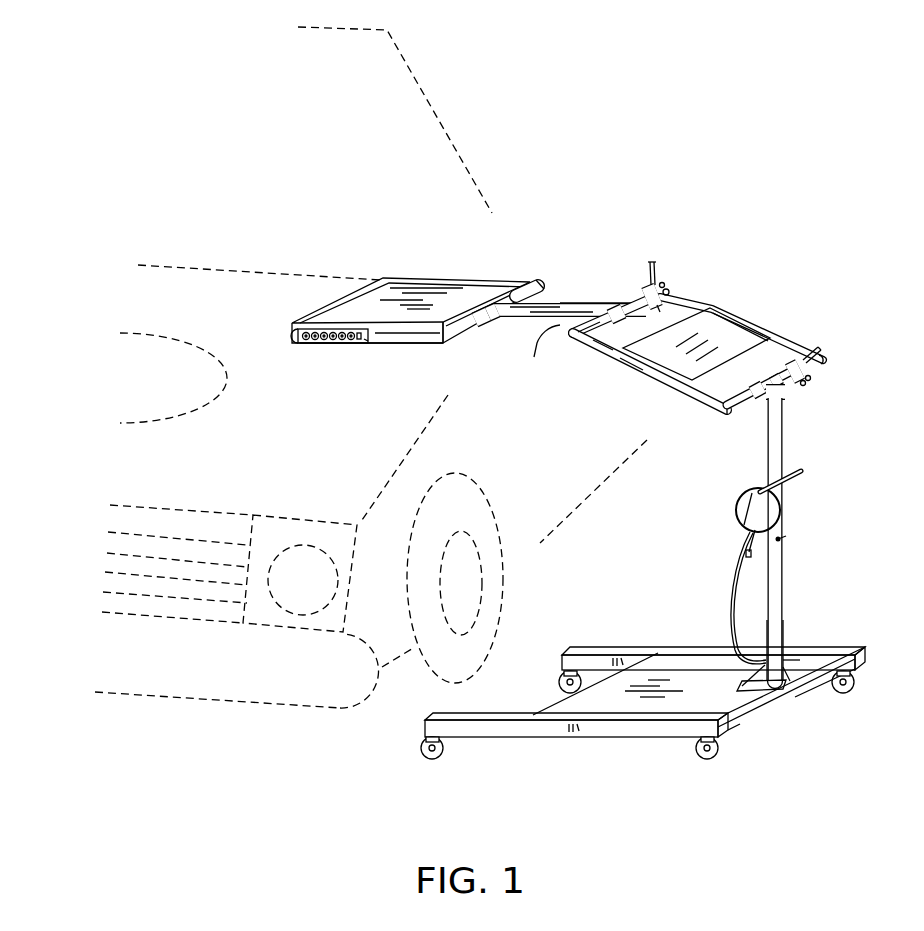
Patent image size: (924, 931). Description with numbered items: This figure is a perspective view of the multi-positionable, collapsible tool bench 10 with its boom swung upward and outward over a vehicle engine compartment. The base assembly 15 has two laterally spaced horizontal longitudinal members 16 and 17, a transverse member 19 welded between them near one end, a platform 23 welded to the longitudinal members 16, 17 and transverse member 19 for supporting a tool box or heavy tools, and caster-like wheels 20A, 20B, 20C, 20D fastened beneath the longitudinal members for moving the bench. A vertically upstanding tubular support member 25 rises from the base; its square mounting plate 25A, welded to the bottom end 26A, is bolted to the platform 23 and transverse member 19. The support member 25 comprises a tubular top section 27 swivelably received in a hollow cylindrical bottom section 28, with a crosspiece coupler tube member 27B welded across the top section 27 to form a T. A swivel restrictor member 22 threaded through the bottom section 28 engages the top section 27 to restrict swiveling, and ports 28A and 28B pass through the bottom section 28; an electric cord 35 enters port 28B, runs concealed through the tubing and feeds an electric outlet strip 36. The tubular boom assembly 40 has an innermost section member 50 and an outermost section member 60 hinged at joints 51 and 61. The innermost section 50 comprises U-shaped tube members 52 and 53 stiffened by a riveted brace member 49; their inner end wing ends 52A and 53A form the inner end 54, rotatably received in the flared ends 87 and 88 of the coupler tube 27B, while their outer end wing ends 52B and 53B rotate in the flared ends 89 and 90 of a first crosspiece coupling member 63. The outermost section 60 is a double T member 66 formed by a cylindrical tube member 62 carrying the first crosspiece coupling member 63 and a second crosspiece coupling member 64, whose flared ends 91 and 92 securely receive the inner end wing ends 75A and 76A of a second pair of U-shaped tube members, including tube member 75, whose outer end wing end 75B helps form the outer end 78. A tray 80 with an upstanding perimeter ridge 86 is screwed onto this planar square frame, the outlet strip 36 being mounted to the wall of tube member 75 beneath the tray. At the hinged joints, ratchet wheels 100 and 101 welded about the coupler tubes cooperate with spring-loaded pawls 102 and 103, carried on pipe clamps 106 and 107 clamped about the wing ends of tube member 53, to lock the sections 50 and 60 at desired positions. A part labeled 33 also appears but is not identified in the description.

The tool bench 10 is at (606, 190).
The base assembly 15 is at (645, 678).
The longitudinal member 16 is at (528, 737).
The longitudinal member 17 is at (627, 648).
The transverse member 19 is at (748, 720).
The caster-like wheel 20A is at (427, 757).
The caster-like wheel 20B is at (707, 760).
The caster-like wheel 20C is at (558, 679).
The caster-like wheel 20D is at (850, 691).
The swivel restrictor member 22 is at (787, 537).
The platform 23 is at (572, 705).
The support member 25 is at (744, 482).
The mounting plate 25A is at (762, 691).
The bottom end 26A is at (790, 688).
The top section 27 is at (780, 414).
The crosspiece coupler tube member 27B is at (787, 398).
The bottom section 28 is at (783, 565).
The port 28A is at (796, 640).
The port 28B is at (762, 640).
The post mount 33 is at (830, 642).
The electric cord 35 is at (731, 590).
The electric outlet strip 36 is at (335, 350).
The boom assembly 40 is at (544, 334).
The brace member 49 is at (735, 330).
The innermost section member 50 is at (725, 354).
The hinged joint 51 is at (760, 402).
The U-shaped tube member 52 is at (700, 402).
The inner end wing end 52A is at (735, 407).
The outer end wing end 52B is at (550, 355).
The U-shaped tube member 53 is at (783, 338).
The inner end wing end 53A is at (826, 362).
The outer end wing end 53B is at (664, 283).
The inner end 54 is at (772, 378).
The outermost section member 60 is at (392, 350).
The hinged joint 61 is at (612, 308).
The cylindrical tube member 62 is at (566, 305).
The first crosspiece coupling member 63 is at (630, 318).
The second crosspiece coupling member 64 is at (493, 317).
The double T member 66 is at (595, 302).
The U-shaped tube member 75 is at (420, 350).
The inner end wing end 75A is at (453, 333).
The outer end wing end 75B is at (292, 333).
The inner end wing end 76A is at (541, 291).
The outer end 78 is at (322, 296).
The tray 80 is at (478, 292).
The upstanding ridge 86 is at (425, 278).
The flared end 87 is at (754, 389).
The flared end 88 is at (806, 384).
The flared end 89 is at (613, 323).
The flared end 90 is at (656, 306).
The flared end 91 is at (480, 323).
The flared end 92 is at (519, 287).
The ratchet wheel 100 is at (788, 366).
The ratchet wheel 101 is at (648, 290).
The spring-loaded pawl 102 is at (816, 348).
The spring-loaded pawl 103 is at (653, 263).
The pipe clamp 106 is at (811, 378).
The pipe clamp 107 is at (670, 292).